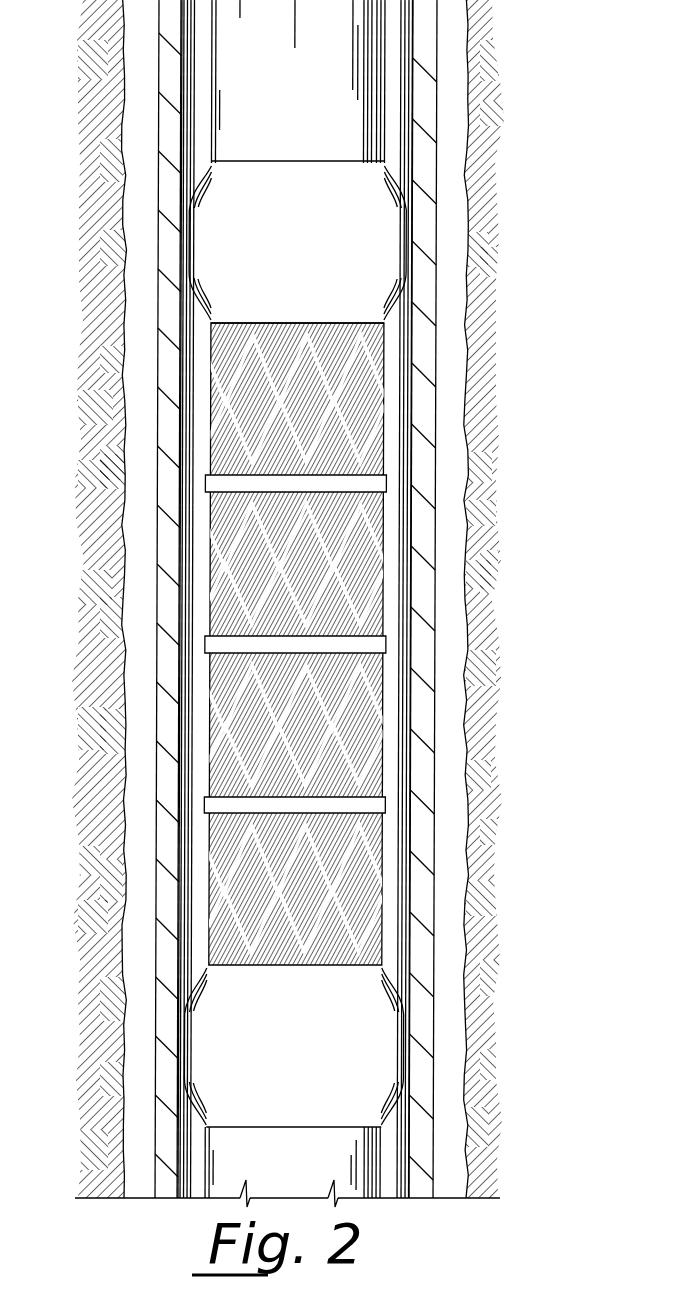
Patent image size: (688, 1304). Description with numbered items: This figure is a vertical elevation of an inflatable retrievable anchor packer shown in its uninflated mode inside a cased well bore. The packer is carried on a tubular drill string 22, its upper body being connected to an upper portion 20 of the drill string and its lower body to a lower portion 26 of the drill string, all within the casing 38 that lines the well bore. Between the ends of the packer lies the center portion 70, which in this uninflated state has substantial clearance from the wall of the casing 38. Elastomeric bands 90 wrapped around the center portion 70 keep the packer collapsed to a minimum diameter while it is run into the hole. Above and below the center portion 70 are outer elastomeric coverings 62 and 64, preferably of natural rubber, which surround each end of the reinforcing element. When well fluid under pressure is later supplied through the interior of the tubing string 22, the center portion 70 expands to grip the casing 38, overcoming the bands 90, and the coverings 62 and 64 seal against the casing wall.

The upper portion of the tubular drill string 20 is at (386, 137).
The tubular drill string 22 is at (368, 47).
The lower portion of the tubular drill string 26 is at (382, 1157).
The casing 38 is at (420, 1100).
The outer elastomeric covering 62 is at (386, 249).
The outer elastomeric covering 64 is at (388, 1044).
The center portion 70 is at (365, 396).
The elastomeric bands 90 is at (389, 485).